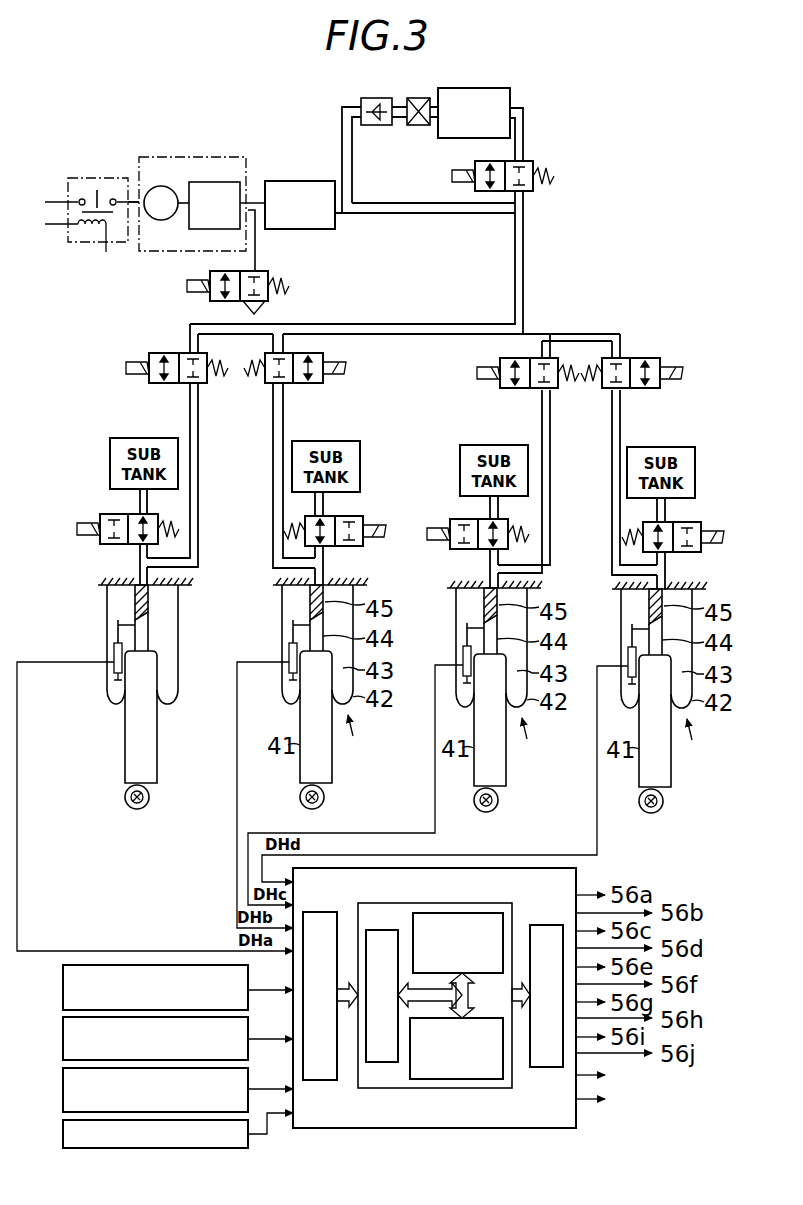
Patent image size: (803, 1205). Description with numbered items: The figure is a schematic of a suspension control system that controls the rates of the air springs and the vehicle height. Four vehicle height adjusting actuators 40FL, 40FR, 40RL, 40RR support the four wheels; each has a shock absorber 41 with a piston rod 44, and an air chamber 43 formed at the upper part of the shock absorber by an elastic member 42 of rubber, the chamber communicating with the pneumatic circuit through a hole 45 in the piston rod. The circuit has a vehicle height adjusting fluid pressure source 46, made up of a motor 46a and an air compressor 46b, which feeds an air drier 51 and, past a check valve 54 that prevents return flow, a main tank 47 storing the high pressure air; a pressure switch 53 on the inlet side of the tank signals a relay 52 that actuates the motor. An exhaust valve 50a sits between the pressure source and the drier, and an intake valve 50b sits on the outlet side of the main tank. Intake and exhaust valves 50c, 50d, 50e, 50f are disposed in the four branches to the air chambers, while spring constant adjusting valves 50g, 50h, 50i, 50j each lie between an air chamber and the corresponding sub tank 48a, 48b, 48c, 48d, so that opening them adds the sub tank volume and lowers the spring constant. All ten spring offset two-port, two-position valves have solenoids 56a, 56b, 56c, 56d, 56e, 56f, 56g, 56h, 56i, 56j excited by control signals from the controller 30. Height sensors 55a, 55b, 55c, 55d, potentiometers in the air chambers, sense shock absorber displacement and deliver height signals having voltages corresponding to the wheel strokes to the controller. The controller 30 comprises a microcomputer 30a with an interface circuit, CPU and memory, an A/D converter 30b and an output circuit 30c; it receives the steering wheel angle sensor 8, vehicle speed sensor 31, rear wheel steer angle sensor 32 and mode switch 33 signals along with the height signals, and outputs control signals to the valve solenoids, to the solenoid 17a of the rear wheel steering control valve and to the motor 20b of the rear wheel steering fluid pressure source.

The steering wheel angle sensor 8 is at (63, 991).
The solenoid of the control valve 17a is at (614, 1075).
The motor of the rear wheel steering fluid pressure source 20b is at (615, 1099).
The controller 30 is at (434, 1011).
The microcomputer 30a is at (358, 910).
The A/D converter 30b is at (322, 1080).
The output circuit 30c is at (545, 1067).
The vehicle speed sensor 31 is at (63, 1041).
The rear wheel steer angle sensor 32 is at (63, 1102).
The mode switch 33 is at (105, 1148).
The vehicle height adjusting actuator 40FL is at (155, 764).
The vehicle height adjusting actuator 40FR is at (274, 753).
The vehicle height adjusting actuator 40RL is at (415, 743).
The vehicle height adjusting actuator 40RR is at (500, 732).
The shock absorber 41 is at (125, 745).
The elastic member 42 is at (178, 697).
The air chamber 43 is at (168, 668).
The piston rod 44 is at (148, 636).
The hole 45 is at (150, 602).
The vehicle height adjusting fluid pressure source 46 is at (184, 215).
The motor 46a is at (188, 225).
The air compressor 46b is at (174, 190).
The main tank 47 is at (510, 103).
The sub tank 48a is at (110, 466).
The sub tank 48b is at (360, 463).
The sub tank 48c is at (474, 448).
The sub tank 48d is at (695, 471).
The exhaust valve 50a is at (228, 302).
The intake valve 50b is at (535, 163).
The intake and exhaust valve 50c is at (172, 383).
The intake and exhaust valve 50d is at (298, 383).
The intake and exhaust valve 50e is at (501, 358).
The intake and exhaust valve 50f is at (638, 358).
The spring constant adjusting valve 50g is at (111, 514).
The spring constant adjusting valve 50h is at (356, 516).
The spring constant adjusting valve 50i is at (466, 519).
The spring constant adjusting valve 50j is at (690, 522).
The air drier 51 is at (321, 229).
The relay 52 is at (99, 178).
The pressure switch 53 is at (418, 98).
The check valve 54 is at (374, 98).
The height sensor 55a is at (113, 668).
The height sensor 55b is at (288, 672).
The height sensor 55c is at (473, 675).
The height sensor 55d is at (638, 678).
The solenoid 56a is at (190, 286).
The solenoid 56b is at (452, 177).
The solenoid 56c is at (126, 366).
The solenoid 56d is at (347, 368).
The solenoid 56e is at (484, 382).
The solenoid 56f is at (672, 382).
The solenoid 56g is at (80, 538).
The solenoid 56h is at (372, 540).
The solenoid 56i is at (436, 545).
The solenoid 56j is at (716, 548).